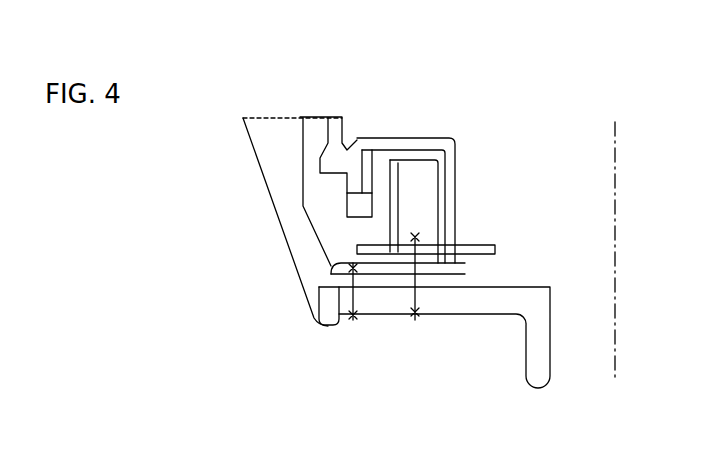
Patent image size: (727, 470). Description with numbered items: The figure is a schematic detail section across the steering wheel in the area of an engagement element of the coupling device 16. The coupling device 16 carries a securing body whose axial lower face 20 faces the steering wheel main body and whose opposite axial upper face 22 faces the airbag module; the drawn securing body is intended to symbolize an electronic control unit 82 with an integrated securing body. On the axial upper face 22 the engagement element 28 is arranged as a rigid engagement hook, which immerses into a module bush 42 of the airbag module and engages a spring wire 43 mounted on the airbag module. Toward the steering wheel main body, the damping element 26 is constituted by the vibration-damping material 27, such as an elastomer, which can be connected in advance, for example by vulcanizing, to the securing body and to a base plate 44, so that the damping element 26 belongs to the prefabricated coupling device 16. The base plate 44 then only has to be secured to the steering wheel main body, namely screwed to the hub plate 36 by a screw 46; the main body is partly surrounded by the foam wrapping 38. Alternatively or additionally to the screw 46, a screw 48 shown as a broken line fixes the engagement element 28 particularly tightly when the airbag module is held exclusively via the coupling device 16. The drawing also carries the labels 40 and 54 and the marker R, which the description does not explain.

The mounting assembly 40 is at (581, 70).
The coupling device 16 is at (505, 170).
The foam wrapping 38 is at (278, 163).
The base plate 44 is at (328, 136).
The spring wire 43 is at (374, 192).
The damping element 26 is at (383, 170).
The vibration-damping material 27 is at (434, 325).
The module bush 42 is at (453, 175).
The electronic control unit 82 is at (470, 248).
The axial upper face 22 is at (460, 243).
The engagement element 28 is at (467, 262).
The axial lower face 20 is at (443, 258).
The base foot 54 is at (551, 339).
The hub plate 36 is at (387, 300).
The screw 46 is at (353, 317).
The screw 48 is at (415, 292).
The region R is at (612, 261).